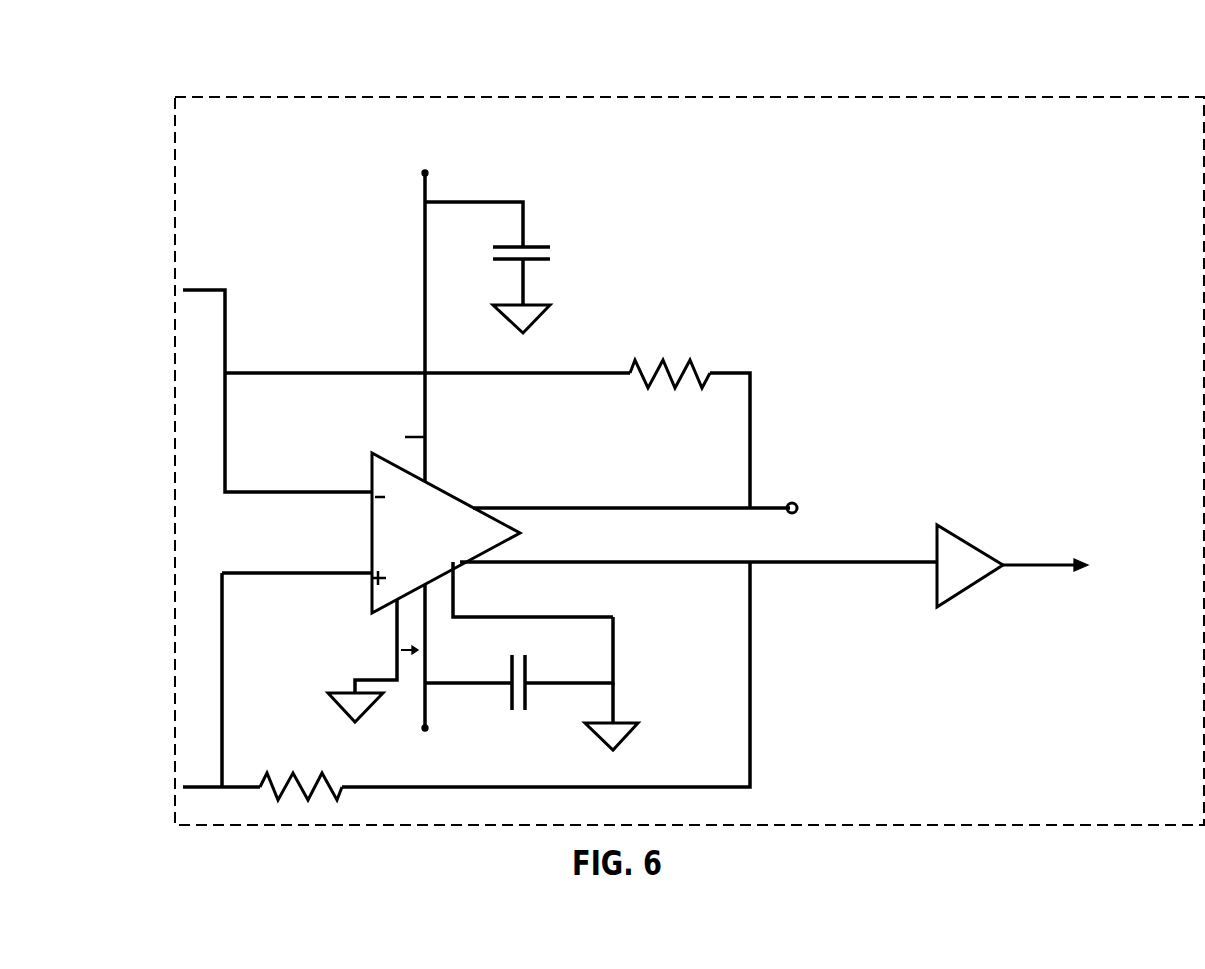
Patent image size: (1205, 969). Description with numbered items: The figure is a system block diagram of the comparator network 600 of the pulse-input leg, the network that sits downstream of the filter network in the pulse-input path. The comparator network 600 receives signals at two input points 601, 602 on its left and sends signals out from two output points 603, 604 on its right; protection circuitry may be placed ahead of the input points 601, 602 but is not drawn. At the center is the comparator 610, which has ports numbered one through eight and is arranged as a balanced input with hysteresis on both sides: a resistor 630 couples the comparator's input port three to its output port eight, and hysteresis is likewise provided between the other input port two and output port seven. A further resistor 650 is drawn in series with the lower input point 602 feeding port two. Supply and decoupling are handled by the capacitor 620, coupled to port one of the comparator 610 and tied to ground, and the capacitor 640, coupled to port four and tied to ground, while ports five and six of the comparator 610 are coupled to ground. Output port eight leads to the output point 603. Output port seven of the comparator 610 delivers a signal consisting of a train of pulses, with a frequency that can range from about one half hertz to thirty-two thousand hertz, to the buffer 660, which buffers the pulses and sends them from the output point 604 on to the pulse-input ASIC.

The comparator network 600 is at (700, 27).
The input point 601 is at (185, 288).
The input point 602 is at (185, 792).
The output point 603 is at (805, 497).
The output point 604 is at (1097, 560).
The comparator 610 is at (455, 493).
The capacitor 620 is at (558, 265).
The resistor 630 is at (670, 355).
The capacitor 640 is at (518, 717).
The resistor 650 is at (318, 770).
The buffer 660 is at (972, 592).